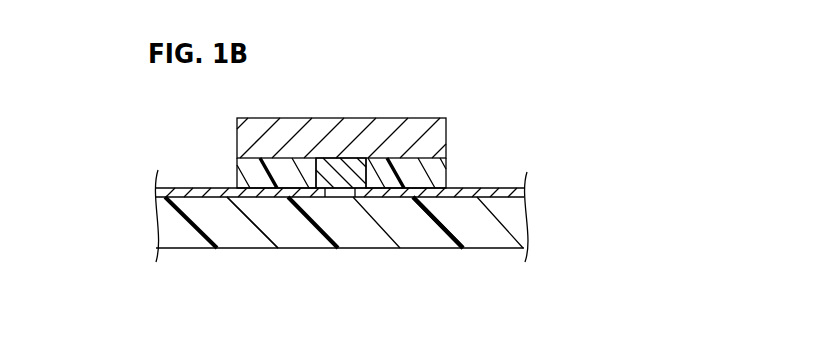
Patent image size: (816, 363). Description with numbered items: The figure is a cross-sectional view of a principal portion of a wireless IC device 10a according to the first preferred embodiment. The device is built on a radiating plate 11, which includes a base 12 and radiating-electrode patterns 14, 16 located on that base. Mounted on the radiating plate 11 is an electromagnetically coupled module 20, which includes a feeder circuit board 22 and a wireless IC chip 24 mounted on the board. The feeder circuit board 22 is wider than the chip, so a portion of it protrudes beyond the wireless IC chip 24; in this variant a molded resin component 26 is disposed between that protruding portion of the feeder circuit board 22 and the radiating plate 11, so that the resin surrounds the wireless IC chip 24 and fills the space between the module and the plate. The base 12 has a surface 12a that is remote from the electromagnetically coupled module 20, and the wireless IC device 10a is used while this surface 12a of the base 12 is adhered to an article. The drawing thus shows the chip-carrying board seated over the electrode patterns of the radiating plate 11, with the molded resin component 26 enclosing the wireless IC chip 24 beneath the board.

The wireless IC device 10a is at (689, 103).
The radiating plate 11 is at (125, 216).
The base 12 is at (517, 220).
The surface 12a is at (355, 250).
The radiating-electrode pattern 14 is at (262, 197).
The radiating-electrode pattern 16 is at (443, 197).
The electromagnetically coupled module 20 is at (415, 63).
The feeder circuit board 22 is at (386, 125).
The wireless IC chip 24 is at (337, 158).
The molded resin component 26 is at (447, 173).